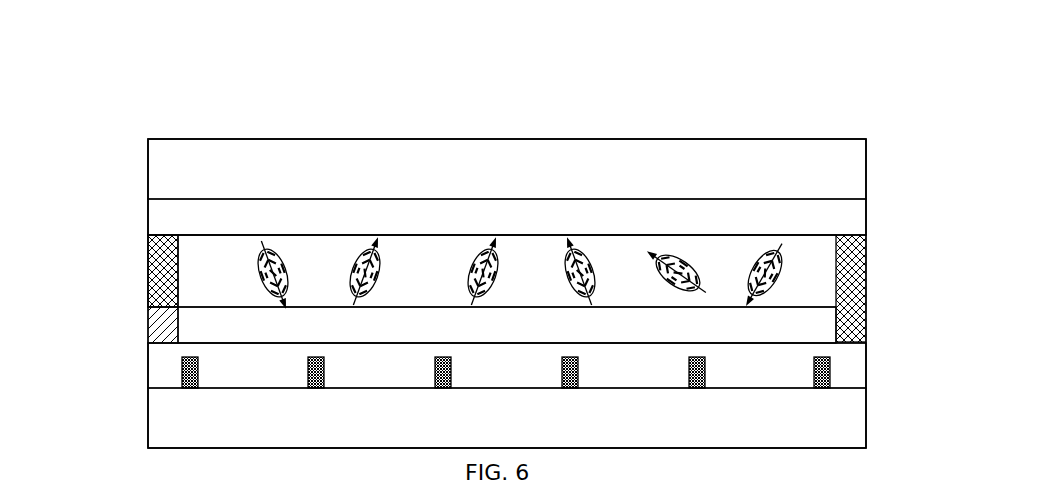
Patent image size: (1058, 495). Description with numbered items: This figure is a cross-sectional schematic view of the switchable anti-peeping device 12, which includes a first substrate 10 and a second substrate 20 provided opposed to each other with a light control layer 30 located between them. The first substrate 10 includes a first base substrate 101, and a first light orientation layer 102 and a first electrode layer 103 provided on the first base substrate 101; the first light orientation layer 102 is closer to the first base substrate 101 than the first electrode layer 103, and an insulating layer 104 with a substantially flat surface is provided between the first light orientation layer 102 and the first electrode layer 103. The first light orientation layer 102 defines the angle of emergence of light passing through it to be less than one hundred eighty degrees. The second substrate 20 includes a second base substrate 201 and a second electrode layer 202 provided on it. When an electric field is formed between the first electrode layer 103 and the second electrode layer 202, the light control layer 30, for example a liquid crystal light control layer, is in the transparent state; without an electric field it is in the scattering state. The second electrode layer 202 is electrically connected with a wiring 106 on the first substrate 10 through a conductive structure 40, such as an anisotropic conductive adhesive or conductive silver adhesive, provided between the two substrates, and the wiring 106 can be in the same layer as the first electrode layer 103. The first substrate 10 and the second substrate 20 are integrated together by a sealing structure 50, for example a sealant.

The switchable anti-peeping device 12 is at (653, 84).
The second substrate 20 is at (131, 139).
The second base substrate 201 is at (855, 192).
The second electrode layer 202 is at (855, 223).
The sealing structure 50 is at (150, 255).
The conductive structure 40 is at (150, 278).
The wiring 106 is at (150, 308).
The light control layer 30 is at (812, 264).
The first electrode layer 103 is at (818, 323).
The first substrate 10 is at (131, 448).
The insulating layer 104 is at (845, 362).
The first light orientation layer 102 is at (830, 373).
The first base substrate 101 is at (855, 422).